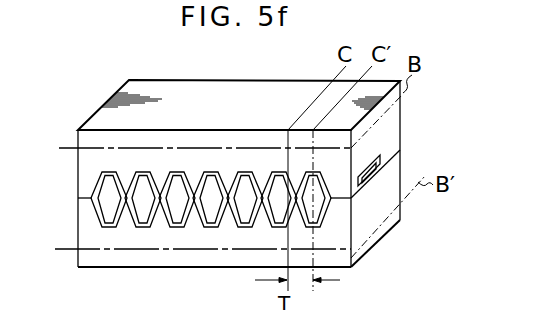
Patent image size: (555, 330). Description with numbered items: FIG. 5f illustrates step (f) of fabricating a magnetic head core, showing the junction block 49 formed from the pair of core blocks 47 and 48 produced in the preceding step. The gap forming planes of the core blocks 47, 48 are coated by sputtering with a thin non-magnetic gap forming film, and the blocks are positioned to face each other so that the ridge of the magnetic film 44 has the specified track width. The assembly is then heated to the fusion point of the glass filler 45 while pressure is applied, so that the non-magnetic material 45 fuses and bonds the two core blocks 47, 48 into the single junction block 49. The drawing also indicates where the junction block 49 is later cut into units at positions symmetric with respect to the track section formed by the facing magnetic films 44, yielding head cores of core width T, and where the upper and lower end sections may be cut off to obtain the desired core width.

The magnetic film 44 is at (291, 212).
The non-magnetic material 45 is at (326, 207).
The core block 47 is at (400, 124).
The core block 48 is at (400, 165).
The junction block 49 is at (445, 249).